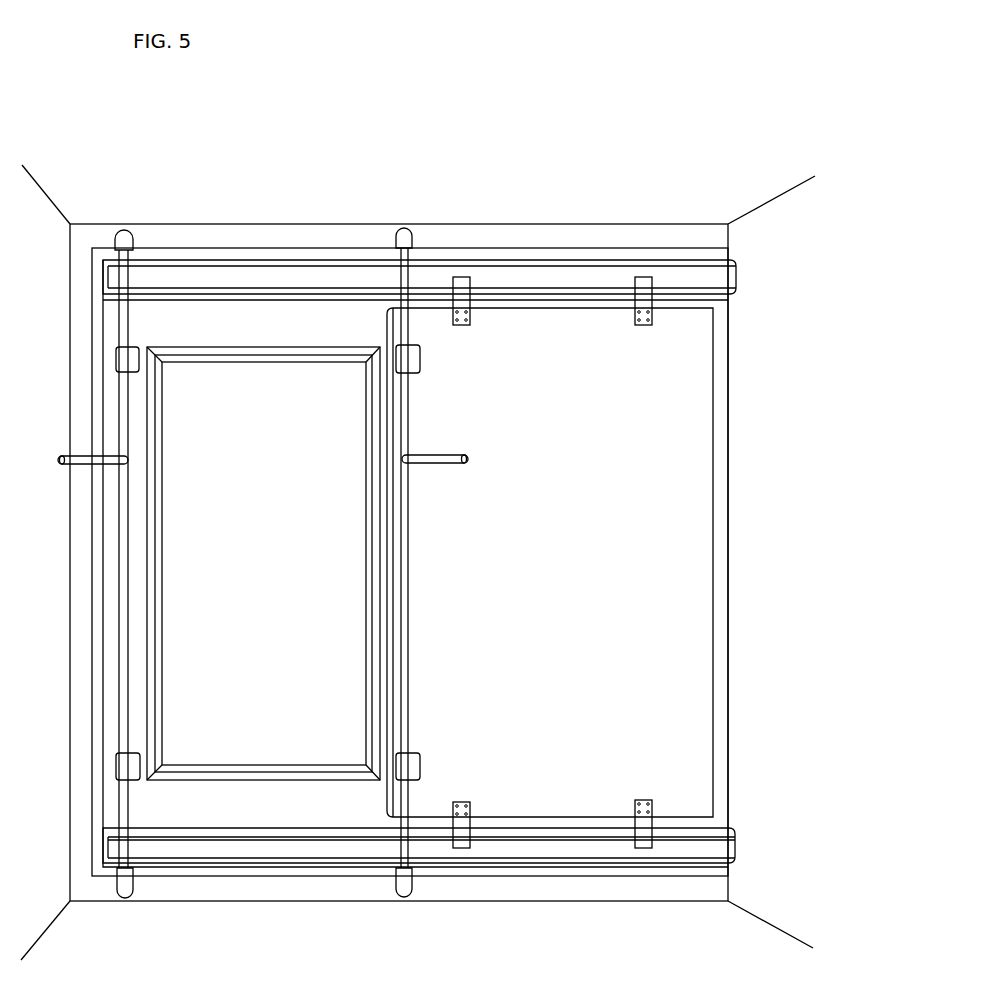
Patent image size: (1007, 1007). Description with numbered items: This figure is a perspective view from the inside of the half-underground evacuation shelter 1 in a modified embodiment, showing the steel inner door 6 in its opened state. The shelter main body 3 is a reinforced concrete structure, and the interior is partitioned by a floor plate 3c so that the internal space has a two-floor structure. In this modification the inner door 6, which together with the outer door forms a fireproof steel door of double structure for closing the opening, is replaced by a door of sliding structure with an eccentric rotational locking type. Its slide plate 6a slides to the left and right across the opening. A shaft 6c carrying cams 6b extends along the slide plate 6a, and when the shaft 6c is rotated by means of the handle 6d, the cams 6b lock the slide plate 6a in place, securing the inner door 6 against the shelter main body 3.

The half-underground evacuation shelter 1 is at (571, 175).
The shelter main body 3 is at (690, 202).
The floor plate 3c is at (747, 942).
The inner door 6 is at (716, 633).
The slide plate 6a is at (690, 448).
The cams 6b is at (418, 357).
The shaft 6c is at (404, 274).
The handle 6d is at (442, 458).